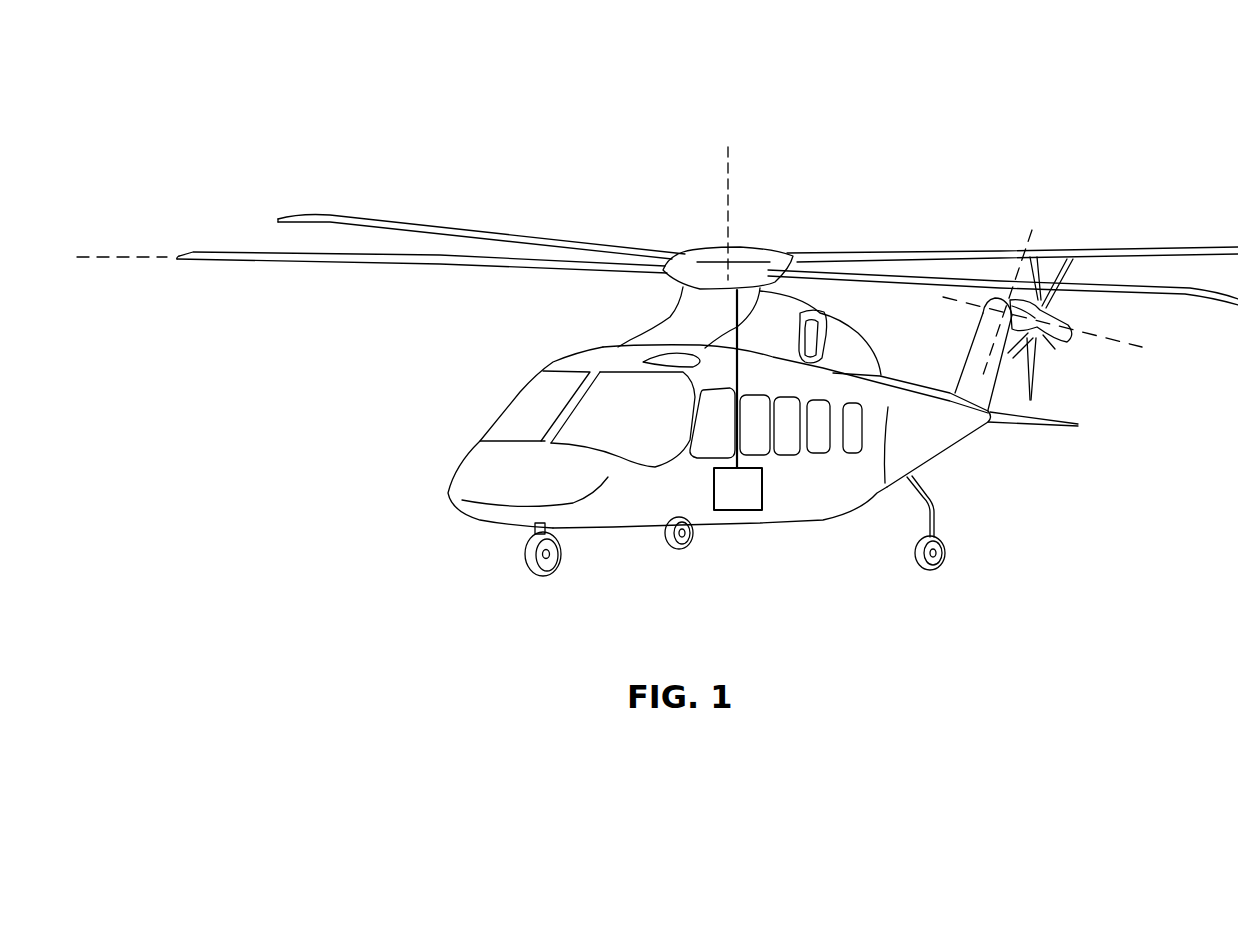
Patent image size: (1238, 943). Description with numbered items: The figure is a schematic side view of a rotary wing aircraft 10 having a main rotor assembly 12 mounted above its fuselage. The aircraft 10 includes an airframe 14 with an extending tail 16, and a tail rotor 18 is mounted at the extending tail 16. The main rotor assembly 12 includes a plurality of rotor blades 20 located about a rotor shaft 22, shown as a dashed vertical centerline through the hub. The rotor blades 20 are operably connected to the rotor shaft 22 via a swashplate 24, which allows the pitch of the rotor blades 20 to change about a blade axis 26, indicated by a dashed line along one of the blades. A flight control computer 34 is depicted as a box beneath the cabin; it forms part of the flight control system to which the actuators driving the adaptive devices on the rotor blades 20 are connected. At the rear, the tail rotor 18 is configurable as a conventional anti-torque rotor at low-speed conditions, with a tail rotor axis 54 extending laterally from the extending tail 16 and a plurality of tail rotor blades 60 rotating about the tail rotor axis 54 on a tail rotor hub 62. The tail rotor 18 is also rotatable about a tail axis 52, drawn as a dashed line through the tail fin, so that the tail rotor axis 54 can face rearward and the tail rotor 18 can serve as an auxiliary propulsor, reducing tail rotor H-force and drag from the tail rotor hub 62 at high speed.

The rotary wing aircraft 10 is at (250, 116).
The main rotor assembly 12 is at (612, 216).
The airframe 14 is at (470, 480).
The extending tail 16 is at (937, 450).
The tail rotor 18 is at (988, 317).
The rotor blades 20 is at (408, 221).
The rotor shaft 22 is at (733, 194).
The swashplate 24 is at (707, 248).
The blade axis 26 is at (113, 257).
The flight control computer 34 is at (748, 484).
The tail axis 52 is at (1036, 232).
The tail rotor axis 54 is at (1110, 342).
The tail rotor blades 60 is at (1057, 300).
The tail rotor hub 62 is at (1025, 347).